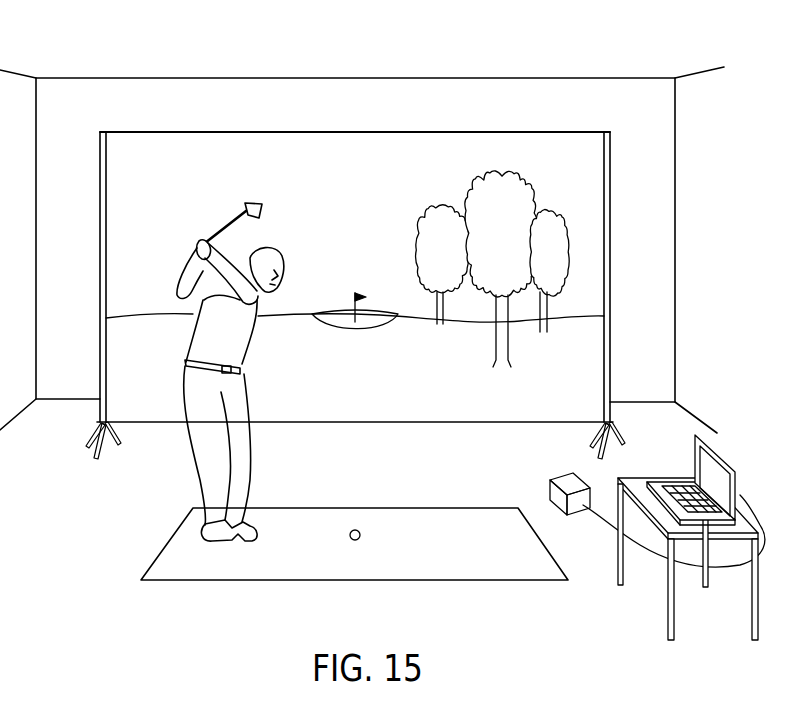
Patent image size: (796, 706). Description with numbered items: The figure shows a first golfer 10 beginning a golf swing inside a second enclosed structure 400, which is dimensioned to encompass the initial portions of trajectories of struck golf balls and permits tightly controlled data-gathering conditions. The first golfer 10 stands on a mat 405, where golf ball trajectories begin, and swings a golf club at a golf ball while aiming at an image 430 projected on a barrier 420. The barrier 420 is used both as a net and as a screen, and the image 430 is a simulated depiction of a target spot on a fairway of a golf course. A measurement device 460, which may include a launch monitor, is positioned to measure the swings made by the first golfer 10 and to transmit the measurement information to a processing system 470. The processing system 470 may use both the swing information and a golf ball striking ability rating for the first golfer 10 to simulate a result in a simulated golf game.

The second enclosed structure 400 is at (646, 96).
The barrier 420 is at (218, 130).
The image 430 is at (289, 163).
The first golfer 10 is at (303, 244).
The mat 405 is at (540, 581).
The measurement device 460 is at (552, 488).
The processing system 470 is at (723, 460).